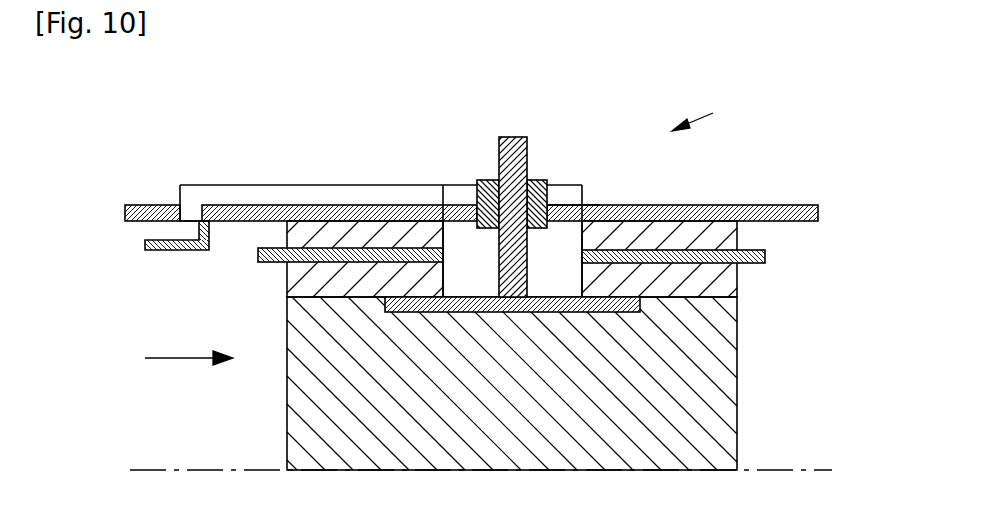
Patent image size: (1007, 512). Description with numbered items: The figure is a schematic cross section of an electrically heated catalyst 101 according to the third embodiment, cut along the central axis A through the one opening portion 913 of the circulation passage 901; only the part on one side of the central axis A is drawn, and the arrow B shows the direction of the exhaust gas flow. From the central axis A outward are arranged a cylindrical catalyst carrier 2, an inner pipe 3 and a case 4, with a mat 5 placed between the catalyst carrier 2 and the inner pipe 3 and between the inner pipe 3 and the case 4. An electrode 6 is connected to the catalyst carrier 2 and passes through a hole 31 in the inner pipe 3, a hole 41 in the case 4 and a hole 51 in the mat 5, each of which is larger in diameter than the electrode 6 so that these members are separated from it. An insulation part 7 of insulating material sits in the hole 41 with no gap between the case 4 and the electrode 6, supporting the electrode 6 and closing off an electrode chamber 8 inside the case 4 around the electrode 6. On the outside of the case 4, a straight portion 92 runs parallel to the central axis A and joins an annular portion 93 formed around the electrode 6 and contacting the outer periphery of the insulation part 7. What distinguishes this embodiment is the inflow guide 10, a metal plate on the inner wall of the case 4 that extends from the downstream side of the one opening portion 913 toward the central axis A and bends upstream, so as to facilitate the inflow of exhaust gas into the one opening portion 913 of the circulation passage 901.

The catalyst carrier 2 is at (727, 406).
The inner pipe 3 is at (257, 253).
The case 4 is at (760, 207).
The mat 5 is at (728, 235).
The electrode 6 is at (510, 140).
The insulation part 7 is at (538, 180).
The electrode chamber 8 is at (463, 268).
The inflow guide 10 is at (158, 249).
The hole 31 is at (582, 253).
The hole 41 is at (548, 197).
The hole 51 is at (586, 208).
The straight portion 92 is at (236, 192).
The annular portion 93 is at (463, 192).
The electrically heated catalyst 101 is at (724, 112).
The circulation passage 901 is at (317, 185).
The one opening portion 913 is at (187, 222).
The central axis A is at (750, 469).
The exhaust gas flow direction B is at (178, 362).